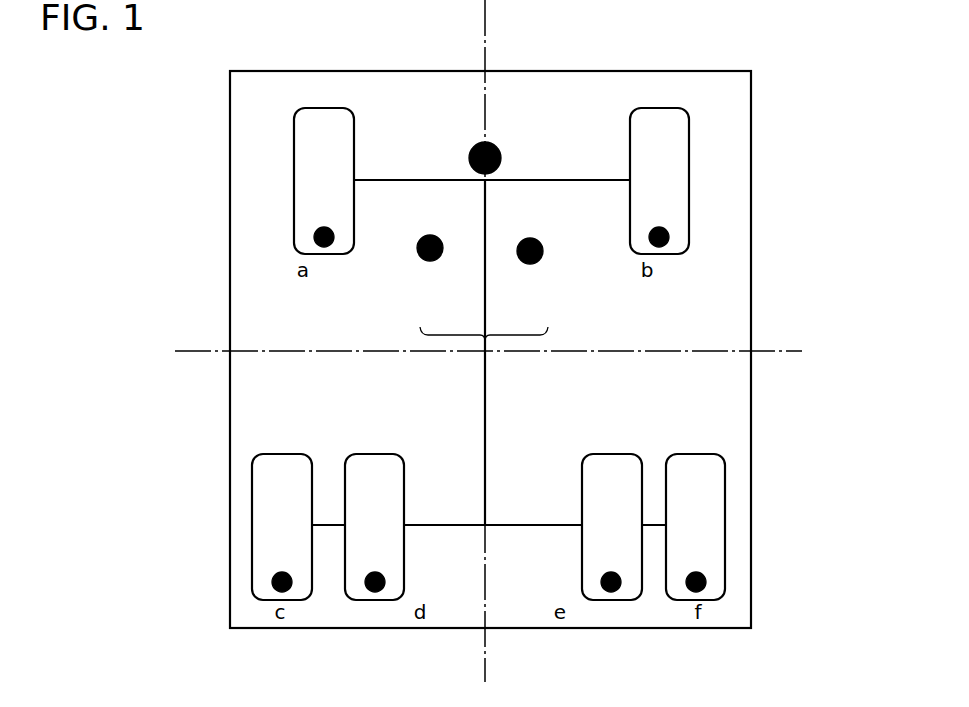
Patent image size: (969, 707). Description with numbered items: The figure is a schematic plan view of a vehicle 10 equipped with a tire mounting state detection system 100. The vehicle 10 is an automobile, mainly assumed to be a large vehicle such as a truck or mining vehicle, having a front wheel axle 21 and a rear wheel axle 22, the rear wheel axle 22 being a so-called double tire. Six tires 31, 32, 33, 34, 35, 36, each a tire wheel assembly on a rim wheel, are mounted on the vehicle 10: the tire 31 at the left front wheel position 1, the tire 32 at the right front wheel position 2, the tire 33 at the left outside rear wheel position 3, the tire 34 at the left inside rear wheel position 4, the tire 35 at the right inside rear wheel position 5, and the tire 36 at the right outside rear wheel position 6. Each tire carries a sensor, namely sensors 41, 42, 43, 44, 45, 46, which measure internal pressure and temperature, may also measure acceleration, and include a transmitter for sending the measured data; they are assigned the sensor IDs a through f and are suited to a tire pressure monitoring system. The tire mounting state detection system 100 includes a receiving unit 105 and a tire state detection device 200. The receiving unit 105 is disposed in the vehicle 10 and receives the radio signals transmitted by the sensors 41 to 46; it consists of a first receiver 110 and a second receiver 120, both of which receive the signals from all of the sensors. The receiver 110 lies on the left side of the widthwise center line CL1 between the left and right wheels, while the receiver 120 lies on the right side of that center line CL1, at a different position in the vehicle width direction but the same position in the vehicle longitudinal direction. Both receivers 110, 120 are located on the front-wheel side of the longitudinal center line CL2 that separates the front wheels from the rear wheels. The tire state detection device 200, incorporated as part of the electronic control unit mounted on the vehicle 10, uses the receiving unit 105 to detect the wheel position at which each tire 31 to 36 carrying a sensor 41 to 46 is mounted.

The left front wheel position 1 is at (324, 166).
The right front wheel position 2 is at (659, 166).
The left outside rear wheel position 3 is at (282, 514).
The left inside rear wheel position 4 is at (374, 514).
The right inside rear wheel position 5 is at (612, 514).
The right outside rear wheel position 6 is at (695, 514).
The vehicle 10 is at (752, 120).
The front wheel axle 21 is at (389, 178).
The rear wheel axle 22 is at (438, 523).
The tire 31 is at (293, 190).
The tire 32 is at (690, 186).
The tire 33 is at (268, 452).
The tire 34 is at (352, 452).
The tire 35 is at (596, 452).
The tire 36 is at (682, 452).
The sensor 41 is at (328, 247).
The sensor 42 is at (663, 247).
The sensor 43 is at (290, 590).
The sensor 44 is at (381, 591).
The sensor 45 is at (620, 590).
The sensor 46 is at (703, 590).
The tire mounting state detection system 100 is at (548, 132).
The receiving unit 105 is at (485, 342).
The receiver 110 is at (434, 262).
The receiver 120 is at (528, 265).
The tire state detection device 200 is at (503, 158).
The center line CL1 is at (487, 48).
The center line CL2 is at (778, 349).